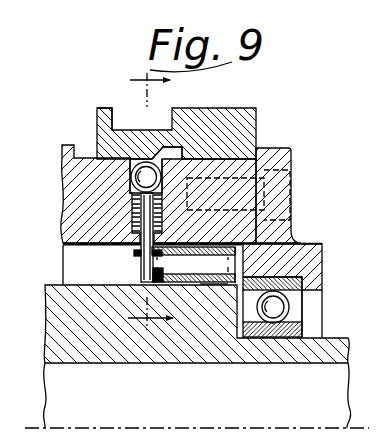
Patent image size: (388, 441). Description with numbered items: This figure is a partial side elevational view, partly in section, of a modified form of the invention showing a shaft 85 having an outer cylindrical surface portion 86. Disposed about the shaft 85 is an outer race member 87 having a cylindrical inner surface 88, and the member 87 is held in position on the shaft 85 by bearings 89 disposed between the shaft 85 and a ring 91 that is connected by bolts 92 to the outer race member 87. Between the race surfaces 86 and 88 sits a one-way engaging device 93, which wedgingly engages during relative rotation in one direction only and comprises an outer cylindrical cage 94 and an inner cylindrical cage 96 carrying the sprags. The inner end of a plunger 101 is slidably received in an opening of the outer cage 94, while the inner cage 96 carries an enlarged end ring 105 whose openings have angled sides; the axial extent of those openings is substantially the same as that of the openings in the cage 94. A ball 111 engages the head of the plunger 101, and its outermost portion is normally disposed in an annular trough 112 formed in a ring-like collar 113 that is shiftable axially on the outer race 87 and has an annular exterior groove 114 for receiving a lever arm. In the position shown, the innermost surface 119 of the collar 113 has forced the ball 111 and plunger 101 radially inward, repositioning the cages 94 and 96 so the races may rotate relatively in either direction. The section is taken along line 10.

The section line 10- 10 is at (138, 201).
The shaft 85 is at (343, 352).
The outer cylindrical surface portion 86 is at (55, 284).
The outer race member 87 is at (62, 190).
The cylindrical inner surface 88 is at (72, 245).
The bearings 89 is at (290, 308).
The ring 91 is at (324, 245).
The bolts 92 is at (293, 173).
The one-way engaging device 93 is at (214, 286).
The outer cylindrical cage 94 is at (299, 241).
The inner cylindrical cage 96 is at (195, 283).
The plunger 101 is at (116, 213).
The enlarged end ring 105 is at (139, 280).
The ball 111 is at (149, 157).
The annular trough 112 is at (174, 156).
The ring-like collar 113 is at (257, 108).
The annular exterior groove 114 is at (106, 119).
The innermost surface 119 is at (131, 181).